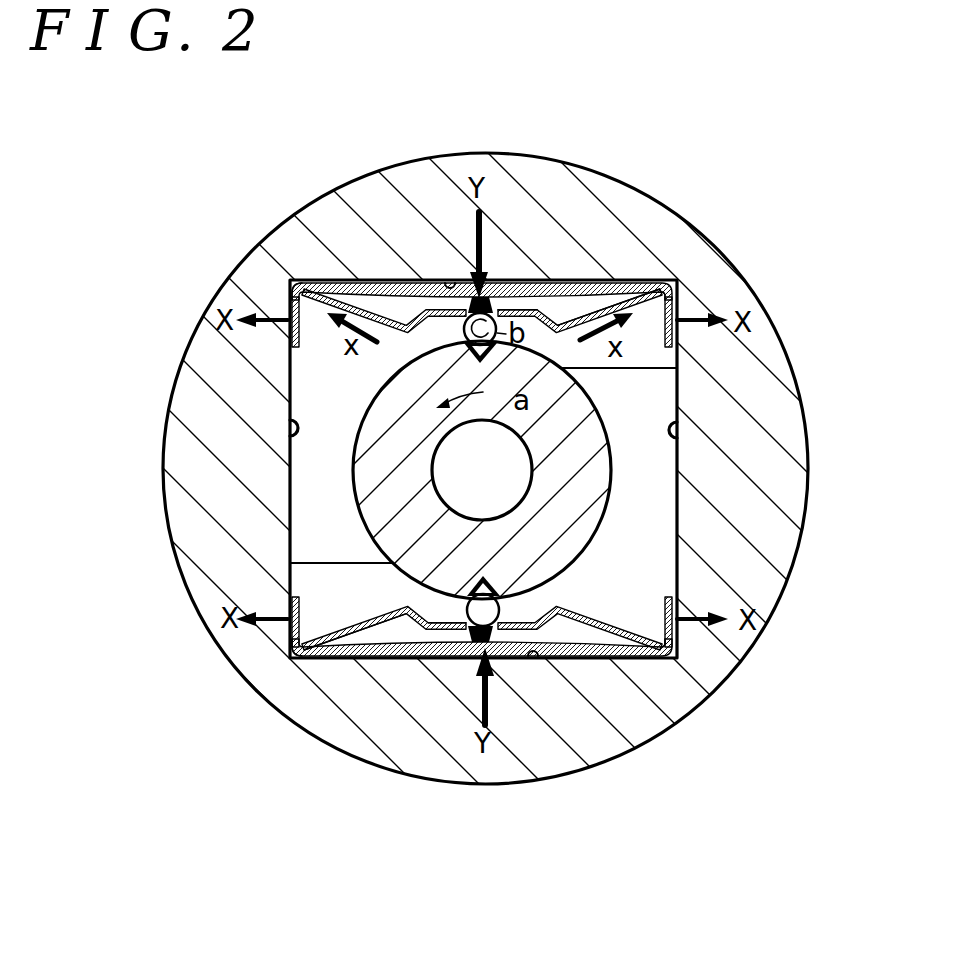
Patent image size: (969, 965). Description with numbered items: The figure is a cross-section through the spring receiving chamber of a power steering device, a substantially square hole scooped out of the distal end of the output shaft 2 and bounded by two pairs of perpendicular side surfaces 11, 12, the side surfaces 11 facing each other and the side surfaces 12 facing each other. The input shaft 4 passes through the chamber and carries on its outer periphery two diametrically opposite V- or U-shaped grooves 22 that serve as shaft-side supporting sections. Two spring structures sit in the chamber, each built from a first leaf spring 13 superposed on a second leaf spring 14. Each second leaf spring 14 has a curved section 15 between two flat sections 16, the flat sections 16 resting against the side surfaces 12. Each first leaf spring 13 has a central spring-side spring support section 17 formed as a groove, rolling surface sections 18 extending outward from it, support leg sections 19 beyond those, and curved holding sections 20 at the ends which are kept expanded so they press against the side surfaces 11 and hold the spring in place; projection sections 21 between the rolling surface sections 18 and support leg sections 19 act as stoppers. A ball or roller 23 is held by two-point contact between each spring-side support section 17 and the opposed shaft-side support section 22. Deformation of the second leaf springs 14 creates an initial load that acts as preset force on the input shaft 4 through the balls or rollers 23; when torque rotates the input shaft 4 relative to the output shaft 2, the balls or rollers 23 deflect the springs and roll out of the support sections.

The output shaft 2 is at (747, 291).
The input shaft 4 is at (383, 402).
The side surface 11 is at (290, 424).
The side surface 12 is at (443, 283).
The first leaf spring 13 is at (797, 193).
The second leaf spring 14 is at (382, 72).
The curved section 15 is at (392, 283).
The flat section 16 is at (309, 283).
The spring-side spring support section 17 is at (486, 298).
The rolling surface section 18 is at (512, 309).
The support leg section 19 is at (610, 308).
The curved holding section 20 is at (672, 295).
The projection section 21 is at (556, 325).
The shaft-side supporting section 22 is at (677, 367).
The ball or roller 23 is at (463, 283).